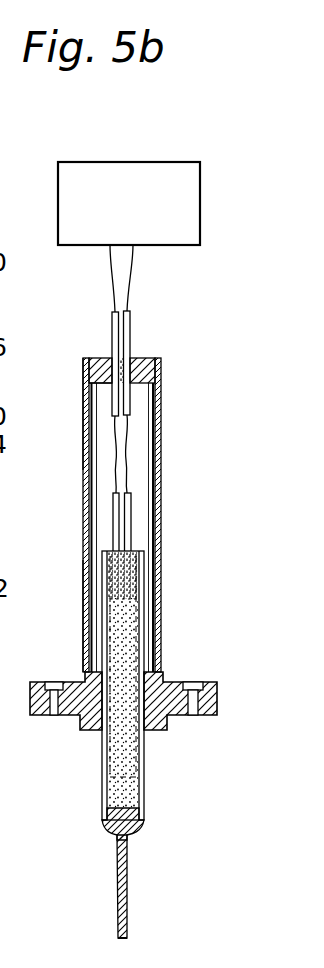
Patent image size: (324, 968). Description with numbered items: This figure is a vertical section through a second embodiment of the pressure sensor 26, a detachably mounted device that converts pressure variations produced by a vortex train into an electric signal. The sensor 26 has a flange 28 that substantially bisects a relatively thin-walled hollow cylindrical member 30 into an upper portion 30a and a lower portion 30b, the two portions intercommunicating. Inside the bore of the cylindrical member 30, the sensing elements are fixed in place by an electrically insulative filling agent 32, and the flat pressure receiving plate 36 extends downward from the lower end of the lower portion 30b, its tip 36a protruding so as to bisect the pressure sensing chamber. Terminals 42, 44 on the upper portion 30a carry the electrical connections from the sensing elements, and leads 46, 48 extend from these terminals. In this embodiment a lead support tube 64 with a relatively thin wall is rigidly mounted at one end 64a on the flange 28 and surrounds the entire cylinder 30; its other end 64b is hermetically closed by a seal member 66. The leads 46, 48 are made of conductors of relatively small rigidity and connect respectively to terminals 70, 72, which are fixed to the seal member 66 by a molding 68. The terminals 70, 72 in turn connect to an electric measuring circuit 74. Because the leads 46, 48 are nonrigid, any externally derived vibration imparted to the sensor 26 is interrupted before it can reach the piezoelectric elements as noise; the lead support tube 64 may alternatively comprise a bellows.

The electric measuring circuit 74 is at (58, 203).
The terminal 72 is at (114, 327).
The terminal 70 is at (128, 322).
The molding 68 is at (110, 360).
The seal member 66 is at (146, 359).
The lead support tube 64 is at (169, 495).
The other end of lead support tube 64b is at (88, 395).
The one end of lead support tube 64a is at (88, 662).
The lead 48 is at (113, 462).
The lead 46 is at (143, 456).
The terminal 44 is at (119, 512).
The terminal 42 is at (130, 527).
The hollow cylindrical member 30 is at (136, 695).
The upper portion of cylindrical member 30a is at (145, 610).
The lower portion of cylindrical member 30b is at (165, 808).
The electrically insulative filling agent 32 is at (118, 795).
The flange 28 is at (207, 682).
The pressure sensor 26 is at (158, 742).
The flat pressure receiving plate 36 is at (128, 880).
The needle tip 36a is at (127, 937).